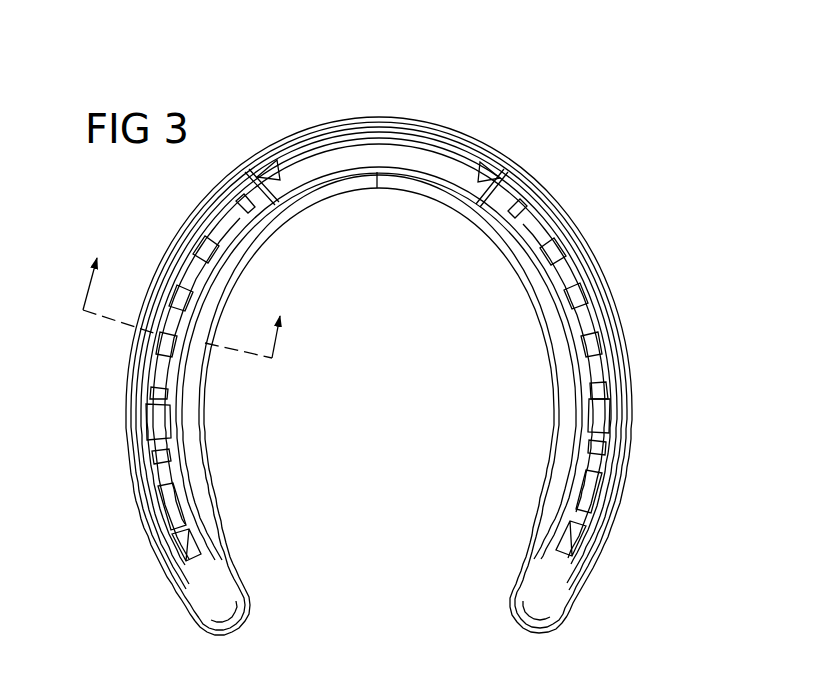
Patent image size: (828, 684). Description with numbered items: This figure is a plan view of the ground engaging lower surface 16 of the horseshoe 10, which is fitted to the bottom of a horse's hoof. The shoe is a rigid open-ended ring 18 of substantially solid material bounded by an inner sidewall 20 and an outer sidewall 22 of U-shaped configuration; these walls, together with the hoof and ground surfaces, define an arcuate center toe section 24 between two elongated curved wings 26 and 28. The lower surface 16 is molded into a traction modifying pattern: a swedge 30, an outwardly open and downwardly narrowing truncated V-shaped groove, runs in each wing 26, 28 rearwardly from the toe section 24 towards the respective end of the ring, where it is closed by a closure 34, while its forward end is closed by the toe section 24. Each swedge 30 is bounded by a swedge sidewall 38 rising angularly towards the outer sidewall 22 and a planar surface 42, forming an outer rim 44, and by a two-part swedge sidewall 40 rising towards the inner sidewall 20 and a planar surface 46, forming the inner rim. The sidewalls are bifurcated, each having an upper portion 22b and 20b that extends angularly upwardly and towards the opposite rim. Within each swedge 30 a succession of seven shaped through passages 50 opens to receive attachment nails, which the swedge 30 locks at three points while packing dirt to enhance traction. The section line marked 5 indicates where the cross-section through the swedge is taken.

The horseshoe 10 is at (592, 140).
The center toe section 24 is at (311, 128).
The rigid open-ended ring 18 is at (493, 142).
The wing 28 is at (607, 292).
The outer rim 44 is at (118, 352).
The wing 26 is at (122, 404).
The outer sidewall 22 is at (132, 460).
The upper portion of outer sidewall 22b is at (153, 540).
The inner sidewall 20 is at (207, 462).
The upper portion of inner sidewall 20b is at (180, 424).
The lower surface 16 is at (540, 220).
The swedge 30 is at (585, 325).
The through passage 50 is at (590, 345).
The swedge sidewall 38 is at (153, 428).
The swedge sidewall 40 is at (163, 413).
The planar surface 42 is at (152, 505).
The planar surface 46 is at (178, 372).
The closure 34 is at (217, 598).
The section line 5- 5 is at (194, 283).